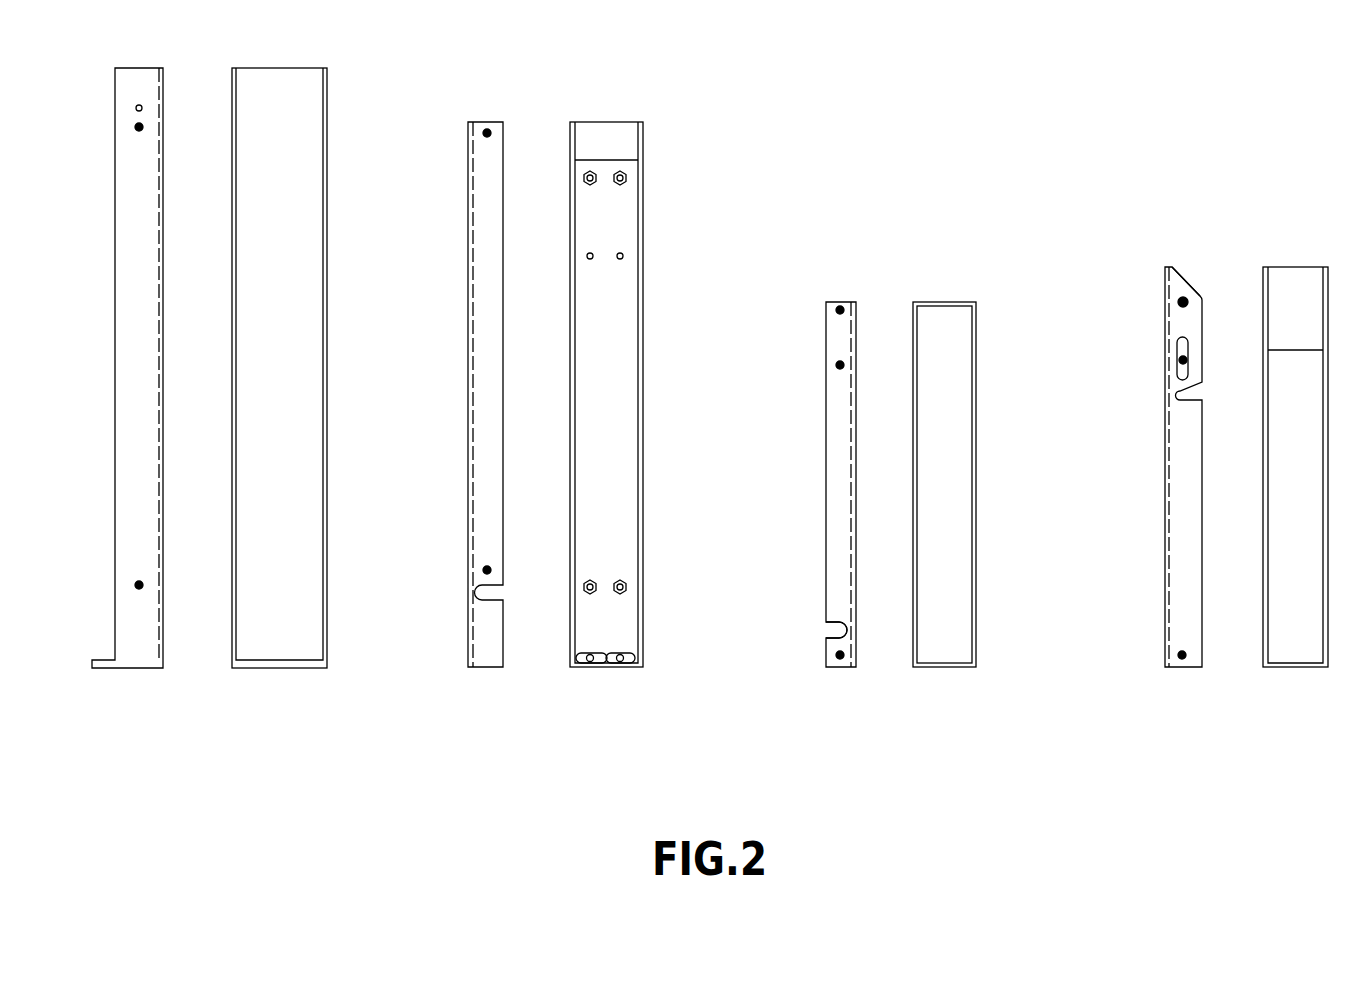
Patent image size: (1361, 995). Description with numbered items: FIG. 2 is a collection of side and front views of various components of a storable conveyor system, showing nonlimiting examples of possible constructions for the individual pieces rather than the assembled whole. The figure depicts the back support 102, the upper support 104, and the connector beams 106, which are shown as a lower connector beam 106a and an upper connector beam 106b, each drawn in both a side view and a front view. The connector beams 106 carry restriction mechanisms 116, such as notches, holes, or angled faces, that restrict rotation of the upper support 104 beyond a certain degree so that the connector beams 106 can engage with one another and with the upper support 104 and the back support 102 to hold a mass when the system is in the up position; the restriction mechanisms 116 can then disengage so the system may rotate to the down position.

The back support 102 is at (228, 42).
The upper support 104 is at (575, 75).
The connector beams 106 is at (1085, 179).
The lower connector beam 106a is at (923, 259).
The upper connector beam 106b is at (1269, 241).
The restriction mechanisms 116 is at (841, 626).